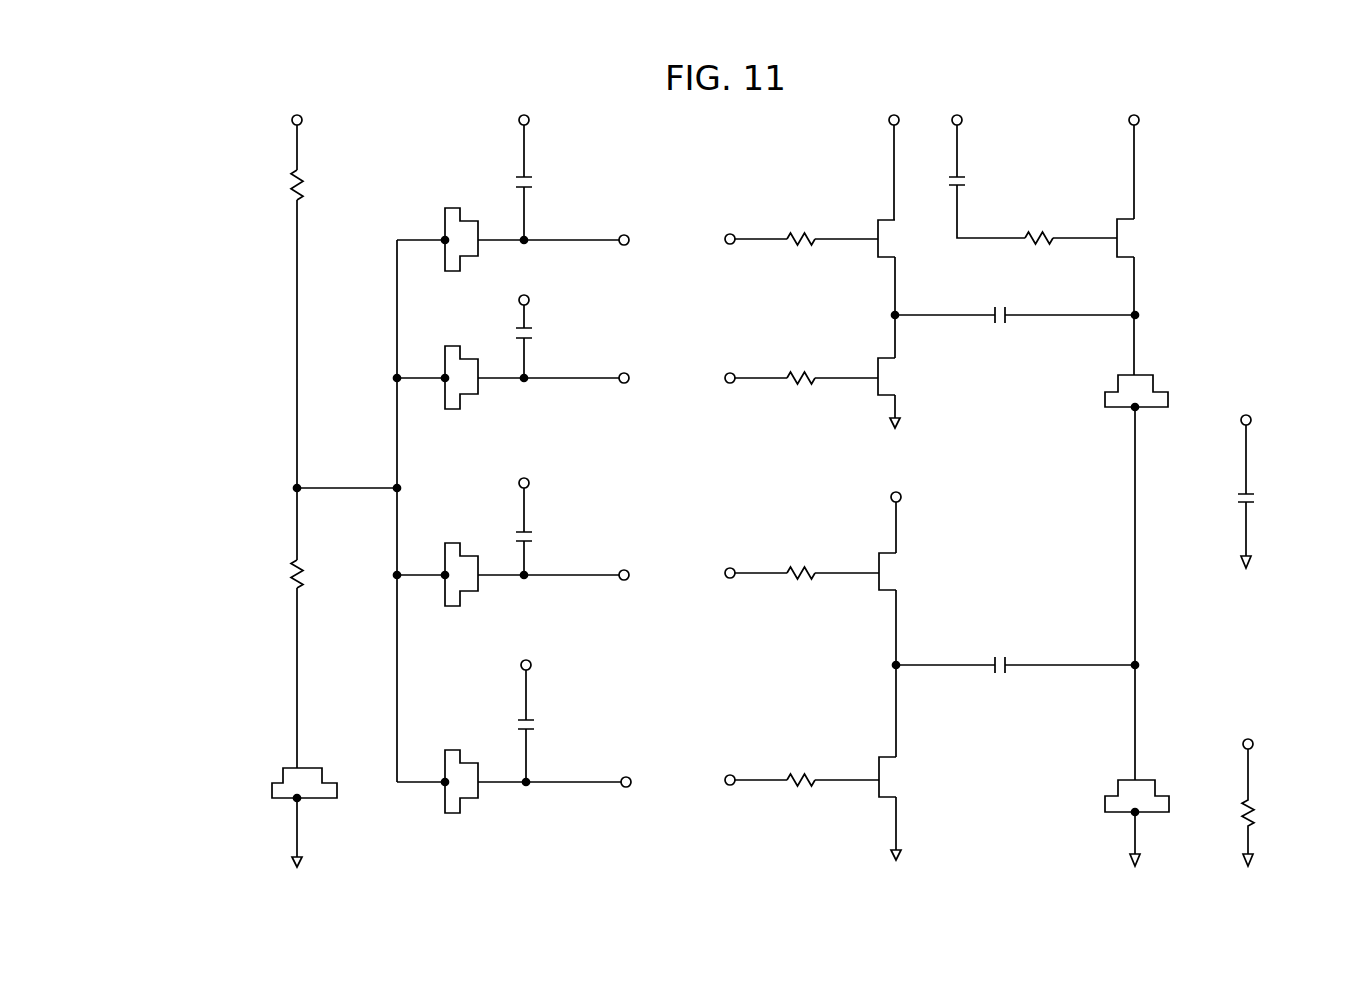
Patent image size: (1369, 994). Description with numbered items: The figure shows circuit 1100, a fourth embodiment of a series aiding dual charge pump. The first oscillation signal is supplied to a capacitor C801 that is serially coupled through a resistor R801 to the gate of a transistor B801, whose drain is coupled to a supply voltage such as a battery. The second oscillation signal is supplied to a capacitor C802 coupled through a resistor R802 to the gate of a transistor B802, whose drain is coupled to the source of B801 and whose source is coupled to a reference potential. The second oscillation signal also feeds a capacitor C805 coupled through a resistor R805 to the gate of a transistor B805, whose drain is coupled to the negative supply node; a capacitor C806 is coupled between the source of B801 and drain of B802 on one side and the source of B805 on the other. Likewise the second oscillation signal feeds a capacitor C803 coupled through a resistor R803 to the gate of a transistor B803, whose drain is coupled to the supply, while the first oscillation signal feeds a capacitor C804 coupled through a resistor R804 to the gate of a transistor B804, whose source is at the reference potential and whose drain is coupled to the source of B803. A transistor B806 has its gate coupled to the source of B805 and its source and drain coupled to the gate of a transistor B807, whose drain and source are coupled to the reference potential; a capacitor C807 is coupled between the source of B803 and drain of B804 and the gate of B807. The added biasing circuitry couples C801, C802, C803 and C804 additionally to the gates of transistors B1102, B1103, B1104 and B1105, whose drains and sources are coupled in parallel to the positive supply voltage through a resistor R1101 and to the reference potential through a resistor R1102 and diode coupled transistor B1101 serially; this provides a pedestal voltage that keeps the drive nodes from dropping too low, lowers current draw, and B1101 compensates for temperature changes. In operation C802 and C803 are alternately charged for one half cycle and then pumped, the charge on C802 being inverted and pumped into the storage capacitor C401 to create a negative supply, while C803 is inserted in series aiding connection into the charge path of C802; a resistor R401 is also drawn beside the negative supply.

The circuit 1100 is at (278, 288).
The resistor R1101 is at (331, 185).
The resistor R1102 is at (331, 573).
The diode coupled transistor B1101 is at (321, 812).
The transistor B1102 is at (473, 236).
The transistor B1103 is at (475, 375).
The transistor B1104 is at (479, 573).
The transistor B1105 is at (484, 780).
The capacitor C801 is at (553, 175).
The capacitor C802 is at (553, 333).
The capacitor C803 is at (553, 524).
The capacitor C804 is at (557, 718).
The capacitor C805 is at (987, 181).
The capacitor C806 is at (1015, 303).
The capacitor C807 is at (1015, 653).
The resistor R801 is at (799, 225).
The resistor R802 is at (799, 364).
The resistor R803 is at (797, 559).
The resistor R804 is at (797, 766).
The resistor R805 is at (1064, 225).
The transistor B801 is at (892, 225).
The transistor B802 is at (894, 363).
The transistor B803 is at (893, 558).
The transistor B804 is at (894, 765).
The transistor B805 is at (1131, 224).
The transistor B806 is at (1123, 391).
The transistor B807 is at (1123, 818).
The storage capacitor C401 is at (1270, 488).
The resistor R401 is at (1266, 797).